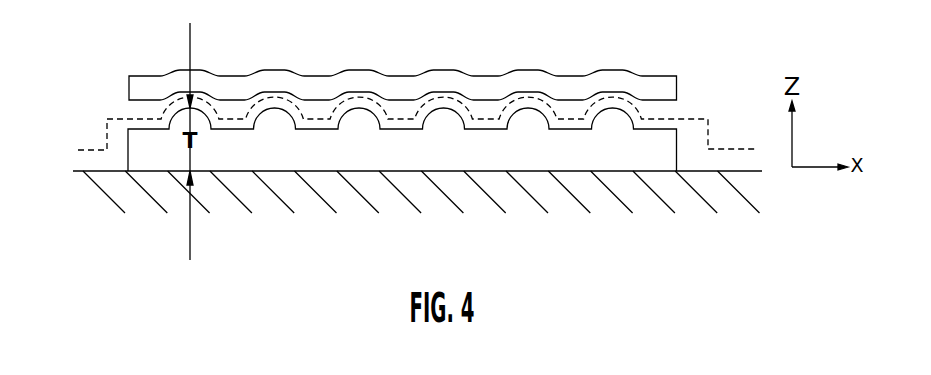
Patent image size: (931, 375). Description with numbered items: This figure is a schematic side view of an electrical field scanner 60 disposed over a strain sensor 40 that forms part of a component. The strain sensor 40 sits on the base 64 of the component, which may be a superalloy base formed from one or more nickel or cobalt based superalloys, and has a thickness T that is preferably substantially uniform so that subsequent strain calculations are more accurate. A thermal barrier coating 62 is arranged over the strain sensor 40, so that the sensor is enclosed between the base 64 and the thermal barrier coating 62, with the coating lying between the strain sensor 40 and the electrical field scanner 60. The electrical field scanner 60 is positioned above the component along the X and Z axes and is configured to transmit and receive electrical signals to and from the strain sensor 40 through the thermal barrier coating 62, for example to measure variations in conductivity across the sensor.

The strain sensor 40 is at (412, 158).
The electrical field scanner 60 is at (433, 69).
The thermal barrier coating 62 is at (106, 117).
The base 64 is at (518, 171).